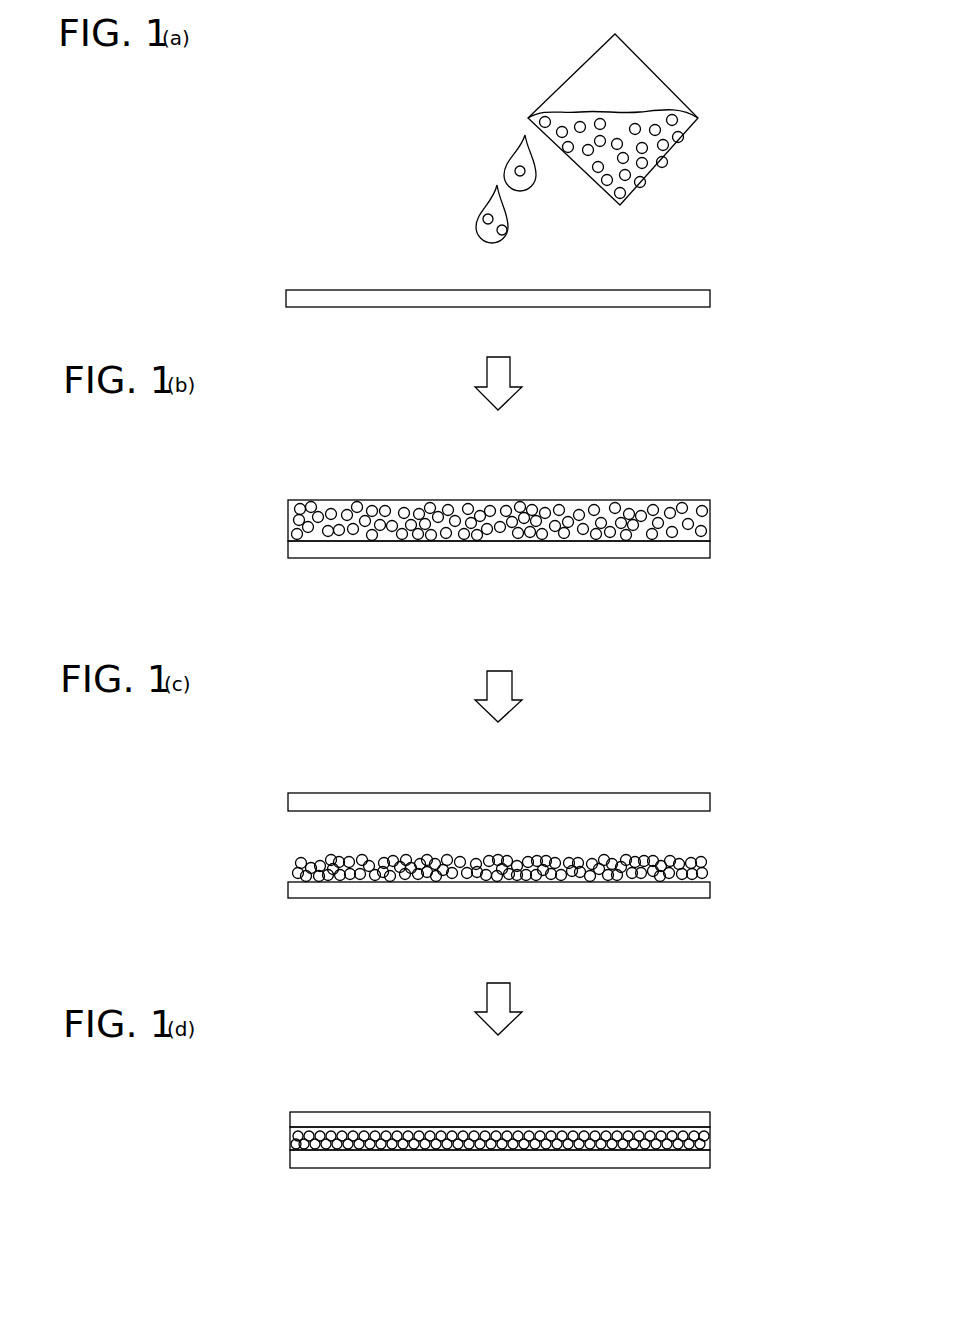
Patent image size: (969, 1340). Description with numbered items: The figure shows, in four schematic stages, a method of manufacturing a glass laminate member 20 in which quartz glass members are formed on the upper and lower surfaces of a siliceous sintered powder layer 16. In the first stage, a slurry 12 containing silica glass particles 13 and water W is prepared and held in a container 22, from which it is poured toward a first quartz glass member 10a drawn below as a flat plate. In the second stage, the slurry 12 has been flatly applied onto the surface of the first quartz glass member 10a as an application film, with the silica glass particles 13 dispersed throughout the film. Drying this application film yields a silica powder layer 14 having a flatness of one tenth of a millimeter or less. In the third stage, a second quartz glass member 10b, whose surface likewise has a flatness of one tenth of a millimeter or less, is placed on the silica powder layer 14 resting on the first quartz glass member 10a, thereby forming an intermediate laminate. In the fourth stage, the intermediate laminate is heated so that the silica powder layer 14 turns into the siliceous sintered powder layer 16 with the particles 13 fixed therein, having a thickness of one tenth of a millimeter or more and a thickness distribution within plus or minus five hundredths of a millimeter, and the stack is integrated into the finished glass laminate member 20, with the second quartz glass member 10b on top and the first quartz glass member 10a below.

In FIG. 1a, the container 22 is at (645, 64).
In FIG. 1a, the water W is at (693, 122).
In FIG. 1a, the slurry 12 is at (677, 152).
In FIG. 1b, the slurry 12 is at (710, 513).
In FIG. 1a, the silica glass particles 13 is at (644, 184).
In FIG. 1b, the silica glass particles 13 is at (662, 512).
In FIG. 1c, the silica glass particles 13 is at (628, 862).
In FIG. 1d, the silica glass particles 13 is at (627, 1134).
In FIG. 1a, the first quartz glass member 10a is at (710, 296).
In FIG. 1b, the first quartz glass member 10a is at (710, 547).
In FIG. 1c, the first quartz glass member 10a is at (710, 890).
In FIG. 1d, the first quartz glass member 10a is at (700, 1160).
In FIG. 1c, the second quartz glass member 10b is at (710, 800).
In FIG. 1d, the second quartz glass member 10b is at (700, 1120).
In FIG. 1c, the silica powder layer 14 is at (541, 849).
In FIG. 1d, the siliceous sintered powder layer 16 is at (539, 1113).
In FIG. 1d, the glass laminate member 20 is at (580, 1089).